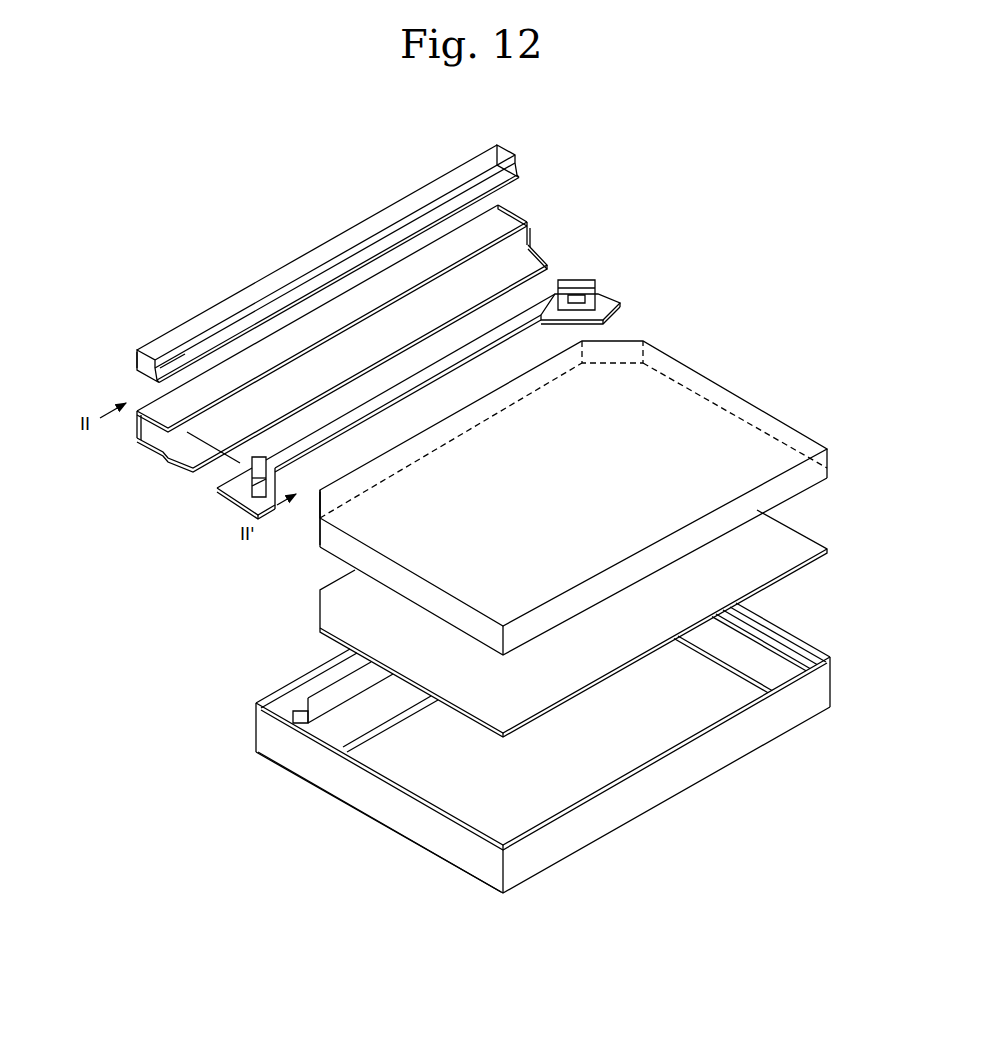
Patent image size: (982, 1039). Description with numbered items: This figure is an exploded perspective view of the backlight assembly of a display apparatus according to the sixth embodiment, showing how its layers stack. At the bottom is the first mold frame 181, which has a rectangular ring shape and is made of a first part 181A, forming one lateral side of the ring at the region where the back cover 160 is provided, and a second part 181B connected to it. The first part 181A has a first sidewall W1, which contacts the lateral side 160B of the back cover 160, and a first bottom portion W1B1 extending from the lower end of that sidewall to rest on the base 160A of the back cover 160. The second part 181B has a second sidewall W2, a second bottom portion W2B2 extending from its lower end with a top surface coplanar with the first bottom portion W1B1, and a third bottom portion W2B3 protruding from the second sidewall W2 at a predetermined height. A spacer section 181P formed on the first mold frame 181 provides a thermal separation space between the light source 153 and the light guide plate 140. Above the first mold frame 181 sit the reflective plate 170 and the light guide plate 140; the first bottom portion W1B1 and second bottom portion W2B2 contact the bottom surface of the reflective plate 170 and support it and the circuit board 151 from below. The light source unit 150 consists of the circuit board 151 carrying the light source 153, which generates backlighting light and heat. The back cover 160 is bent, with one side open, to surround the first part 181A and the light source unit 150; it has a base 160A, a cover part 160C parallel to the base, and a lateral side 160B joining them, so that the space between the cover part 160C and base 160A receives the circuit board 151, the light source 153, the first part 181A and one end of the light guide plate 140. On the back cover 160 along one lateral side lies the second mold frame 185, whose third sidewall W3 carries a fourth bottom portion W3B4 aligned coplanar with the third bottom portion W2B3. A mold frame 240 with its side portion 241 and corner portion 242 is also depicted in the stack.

The second mold frame 185 is at (268, 266).
The third sidewall W3 is at (137, 360).
The fourth bottom portion W3B4 is at (173, 363).
The back cover 160 is at (314, 337).
The cover part 160C is at (157, 403).
The lateral side 160B is at (137, 433).
The base 160A is at (163, 445).
The light source unit 150 is at (590, 260).
The light source 153 is at (578, 270).
The circuit board 151 is at (603, 305).
The mold frame 240 is at (580, 472).
The corner portion of mold frame 242 is at (612, 353).
The side portion of mold frame 241 is at (322, 500).
The light guide plate 140 is at (772, 435).
The reflective plate 170 is at (772, 538).
The first mold frame 181 is at (543, 744).
The first part 181A is at (357, 672).
The spacer section 181P is at (293, 714).
The second part 181B is at (403, 817).
The first sidewall W1 is at (298, 708).
The first bottom portion W1B1 is at (373, 712).
The second sidewall W2 is at (762, 630).
The third bottom portion W2B3 is at (780, 648).
The second bottom portion W2B2 is at (758, 672).